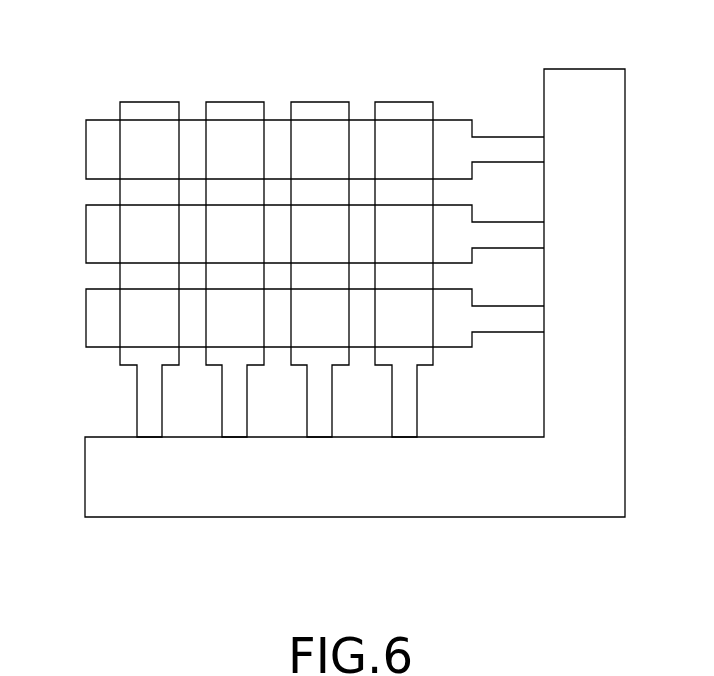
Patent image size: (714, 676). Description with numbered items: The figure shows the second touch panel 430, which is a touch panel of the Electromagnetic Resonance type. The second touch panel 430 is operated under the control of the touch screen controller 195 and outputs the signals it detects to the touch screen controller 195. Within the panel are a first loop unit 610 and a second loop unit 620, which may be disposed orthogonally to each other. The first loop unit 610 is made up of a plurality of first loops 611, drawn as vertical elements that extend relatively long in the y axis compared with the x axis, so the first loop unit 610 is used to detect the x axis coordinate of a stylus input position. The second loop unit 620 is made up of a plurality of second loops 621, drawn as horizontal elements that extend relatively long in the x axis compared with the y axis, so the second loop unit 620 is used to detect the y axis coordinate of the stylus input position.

The second touch panel 430 is at (472, 53).
The touch screen controller 195 is at (626, 295).
The first loop unit 610 is at (432, 90).
The first loop 611 is at (320, 102).
The second loop unit 620 is at (68, 120).
The second loop 621 is at (102, 347).